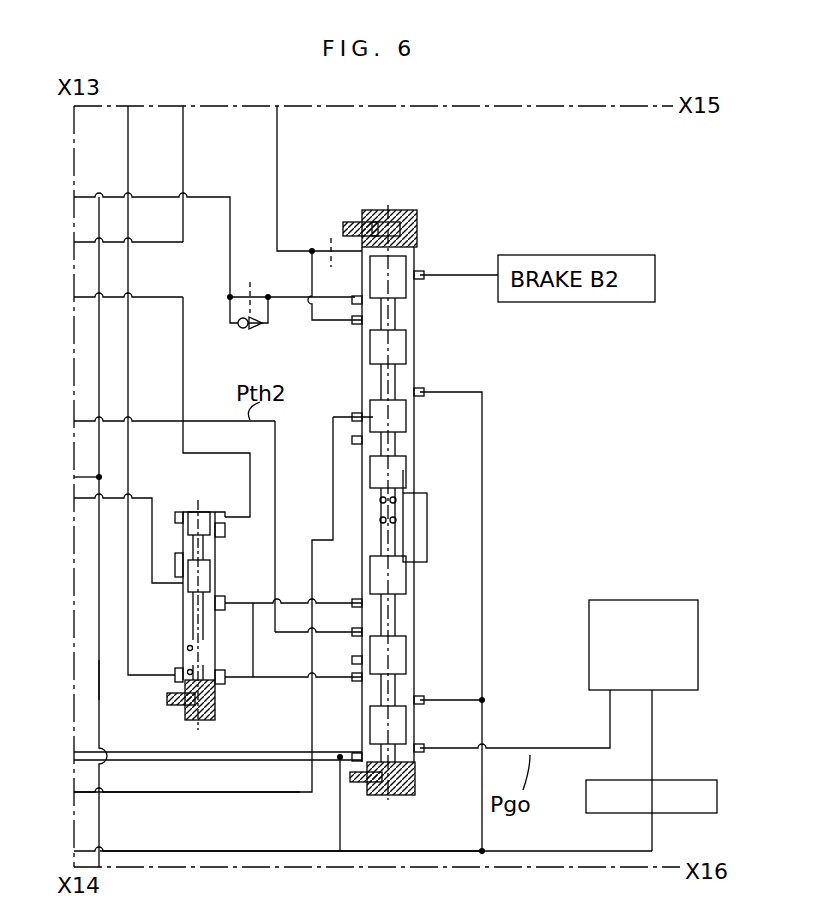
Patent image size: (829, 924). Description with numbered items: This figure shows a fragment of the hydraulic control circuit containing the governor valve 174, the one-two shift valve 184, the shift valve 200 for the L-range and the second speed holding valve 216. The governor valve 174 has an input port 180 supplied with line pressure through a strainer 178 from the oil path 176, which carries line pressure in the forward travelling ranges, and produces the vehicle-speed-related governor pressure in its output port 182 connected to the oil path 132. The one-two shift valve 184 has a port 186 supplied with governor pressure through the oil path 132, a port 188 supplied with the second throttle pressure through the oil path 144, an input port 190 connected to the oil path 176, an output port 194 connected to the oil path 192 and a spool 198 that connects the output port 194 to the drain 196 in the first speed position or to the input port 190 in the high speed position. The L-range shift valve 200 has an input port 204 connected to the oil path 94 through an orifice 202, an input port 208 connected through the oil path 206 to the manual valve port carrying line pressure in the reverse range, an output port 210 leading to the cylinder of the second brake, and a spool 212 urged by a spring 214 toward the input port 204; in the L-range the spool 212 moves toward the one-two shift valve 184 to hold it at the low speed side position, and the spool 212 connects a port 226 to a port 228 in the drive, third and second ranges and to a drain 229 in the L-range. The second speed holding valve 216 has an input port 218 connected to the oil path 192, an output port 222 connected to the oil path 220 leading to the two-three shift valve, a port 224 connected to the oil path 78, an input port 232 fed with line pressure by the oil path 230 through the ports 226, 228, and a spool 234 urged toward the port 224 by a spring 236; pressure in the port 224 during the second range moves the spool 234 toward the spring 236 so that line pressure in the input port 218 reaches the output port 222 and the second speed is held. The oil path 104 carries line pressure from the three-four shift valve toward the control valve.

The oil path 94 is at (277, 152).
The oil path 206 is at (230, 197).
The oil path 78 is at (185, 378).
The oil path 144 is at (283, 482).
The oil path 104 is at (99, 676).
The oil path 132 is at (180, 761).
The oil path 176 is at (455, 862).
The output port 182 is at (610, 695).
The input port 180 is at (652, 695).
The governor valve 174 is at (660, 600).
The strainer 178 is at (692, 780).
The 1-2 shift valve 184 is at (403, 479).
The shift valve for the L-range 200 is at (412, 208).
The orifice 202 is at (330, 238).
The input port 204 is at (348, 226).
The port 186 is at (417, 768).
The input port 208 is at (358, 303).
The output port 210 is at (423, 278).
The spool 212 is at (407, 332).
The port 226 is at (406, 393).
The port 228 is at (372, 413).
The drain 229 is at (358, 440).
The oil path 230 is at (336, 505).
The spring 214 is at (402, 495).
The port 188 is at (365, 625).
The drain 196 is at (360, 660).
The output port 194 is at (350, 680).
The spool 198 is at (375, 717).
The input port 190 is at (420, 700).
The second speed holding valve 216 is at (238, 600).
The port 224 is at (218, 512).
The input port 218 is at (225, 560).
The output port 222 is at (178, 578).
The oil path 220 is at (175, 578).
The spool 234 is at (186, 648).
The spring 236 is at (180, 683).
The input port 232 is at (228, 605).
The oil path 192 is at (283, 678).